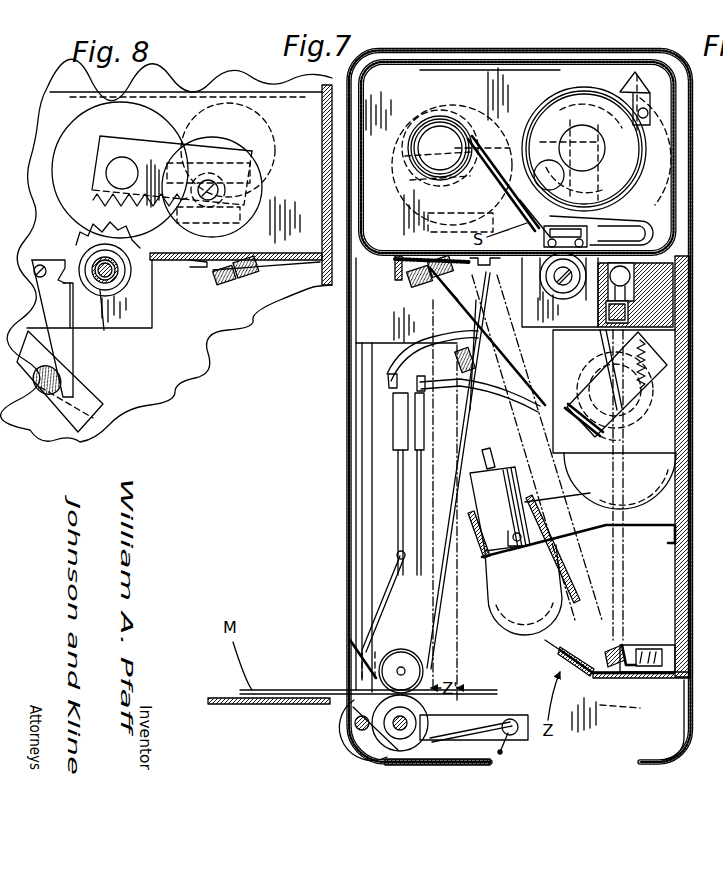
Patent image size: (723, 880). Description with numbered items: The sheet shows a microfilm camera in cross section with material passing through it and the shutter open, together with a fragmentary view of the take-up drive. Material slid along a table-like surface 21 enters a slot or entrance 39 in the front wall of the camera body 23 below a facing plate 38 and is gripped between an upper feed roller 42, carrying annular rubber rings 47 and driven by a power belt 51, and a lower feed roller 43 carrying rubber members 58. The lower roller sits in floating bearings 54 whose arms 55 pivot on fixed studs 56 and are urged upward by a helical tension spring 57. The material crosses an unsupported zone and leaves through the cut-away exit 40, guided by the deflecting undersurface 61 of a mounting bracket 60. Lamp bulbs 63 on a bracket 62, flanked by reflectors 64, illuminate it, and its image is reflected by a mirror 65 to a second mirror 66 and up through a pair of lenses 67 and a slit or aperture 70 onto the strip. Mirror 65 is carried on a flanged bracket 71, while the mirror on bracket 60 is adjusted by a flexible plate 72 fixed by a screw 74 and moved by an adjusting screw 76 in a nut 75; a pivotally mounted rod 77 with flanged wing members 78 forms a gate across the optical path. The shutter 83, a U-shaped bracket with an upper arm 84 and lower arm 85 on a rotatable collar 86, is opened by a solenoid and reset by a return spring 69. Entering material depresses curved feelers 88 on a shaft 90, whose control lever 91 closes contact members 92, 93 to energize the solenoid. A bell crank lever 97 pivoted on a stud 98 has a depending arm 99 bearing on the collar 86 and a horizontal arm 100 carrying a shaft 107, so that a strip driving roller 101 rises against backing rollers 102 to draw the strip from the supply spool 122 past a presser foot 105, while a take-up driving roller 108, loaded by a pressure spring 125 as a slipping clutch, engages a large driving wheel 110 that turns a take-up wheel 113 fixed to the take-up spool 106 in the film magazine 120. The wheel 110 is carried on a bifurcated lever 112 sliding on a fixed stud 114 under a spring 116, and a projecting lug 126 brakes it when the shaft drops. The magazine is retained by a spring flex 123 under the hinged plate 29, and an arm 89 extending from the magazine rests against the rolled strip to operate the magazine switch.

In FIG. 7, the surface 21 is at (220, 692).
In FIG. 7, the camera body 23 is at (345, 433).
In FIG. 7, the hinged plate 29 is at (627, 56).
In FIG. 7, the facing plate 38 is at (345, 592).
In FIG. 7, the slot or entrance 39 is at (336, 679).
In FIG. 7, the cut-away exit 40 is at (670, 715).
In FIG. 7, the upper feed roller 42 is at (399, 660).
In FIG. 7, the lower feed roller 43 is at (410, 748).
In FIG. 7, the annular rubber rings 47 is at (403, 664).
In FIG. 7, the power belt 51 is at (378, 532).
In FIG. 7, the floating bearings 54 is at (438, 711).
In FIG. 7, the arms 55 is at (474, 742).
In FIG. 7, the fixed studs 56 is at (511, 718).
In FIG. 7, the helical tension spring 57 is at (514, 744).
In FIG. 7, the annular rubber members 58 is at (394, 748).
In FIG. 7, the mounting bracket 60 is at (557, 668).
In FIG. 7, the deflecting undersurface 61 is at (576, 671).
In FIG. 7, the bracket 62 is at (578, 530).
In FIG. 7, the lamp bulbs 63 is at (508, 626).
In FIG. 7, the reflectors 64 is at (480, 595).
In FIG. 7, the mirror 65 is at (452, 281).
In FIG. 8, the mirror 65 is at (220, 277).
In FIG. 7, the second mirror 66 is at (626, 650).
In FIG. 7, the lenses 67 is at (626, 313).
In FIG. 7, the return spring 69 is at (668, 390).
In FIG. 7, the slit or aperture 70 is at (693, 262).
In FIG. 7, the flanged bracket 71 is at (394, 272).
In FIG. 7, the flexible plate 72 is at (620, 678).
In FIG. 7, the screw 74 is at (606, 656).
In FIG. 7, the nut 75 is at (649, 650).
In FIG. 7, the adjusting screw 76 is at (660, 680).
In FIG. 7, the pivotally mounted rod 77 is at (456, 357).
In FIG. 7, the flanged wing members 78 is at (478, 358).
In FIG. 7, the shutter 83 is at (605, 443).
In FIG. 8, the shutter 83 is at (88, 386).
In FIG. 7, the upper arm 84 is at (655, 358).
In FIG. 7, the lower arm 85 is at (586, 427).
In FIG. 7, the rotatable collar 86 is at (632, 424).
In FIG. 8, the rotatable collar 86 is at (42, 400).
In FIG. 7, the trip levers or feelers 88 is at (356, 752).
In FIG. 7, the arm 89 is at (629, 92).
In FIG. 7, the rotatable shaft 90 is at (355, 728).
In FIG. 7, the control lever 91 is at (397, 573).
In FIG. 7, the contact member 92 is at (400, 480).
In FIG. 7, the contact member 93 is at (420, 480).
In FIG. 7, the bell crank lever 97 is at (592, 336).
In FIG. 8, the bell crank lever 97 is at (70, 309).
In FIG. 7, the stud 98 is at (662, 281).
In FIG. 8, the stud 98 is at (40, 263).
In FIG. 7, the depending arm 99 is at (605, 340).
In FIG. 8, the depending arm 99 is at (70, 362).
In FIG. 7, the extending arm 100 is at (568, 300).
In FIG. 8, the extending arm 100 is at (58, 267).
In FIG. 7, the strip driving roller 101 is at (548, 282).
In FIG. 7, the backing rollers 102 is at (565, 227).
In FIG. 7, the presser foot 105 is at (602, 222).
In FIG. 7, the take-up spool 106 is at (437, 128).
In FIG. 8, the shaft 107 is at (110, 290).
In FIG. 8, the take-up driving roller 108 is at (125, 280).
In FIG. 7, the large driving wheel 110 is at (505, 124).
In FIG. 8, the large driving wheel 110 is at (156, 113).
In FIG. 7, the bifurcated lever 112 is at (446, 124).
In FIG. 8, the bifurcated lever 112 is at (130, 142).
In FIG. 7, the take-up wheel 113 is at (404, 164).
In FIG. 8, the take-up wheel 113 is at (258, 120).
In FIG. 7, the fixed stud 114 is at (440, 192).
In FIG. 8, the fixed stud 114 is at (257, 193).
In FIG. 8, the spring 116 is at (130, 205).
In FIG. 7, the film magazine 120 is at (538, 56).
In FIG. 7, the supply spool 122 is at (580, 138).
In FIG. 7, the spring flex 123 is at (500, 56).
In FIG. 8, the pressure spring 125 is at (116, 280).
In FIG. 8, the projecting lug 126 is at (158, 251).